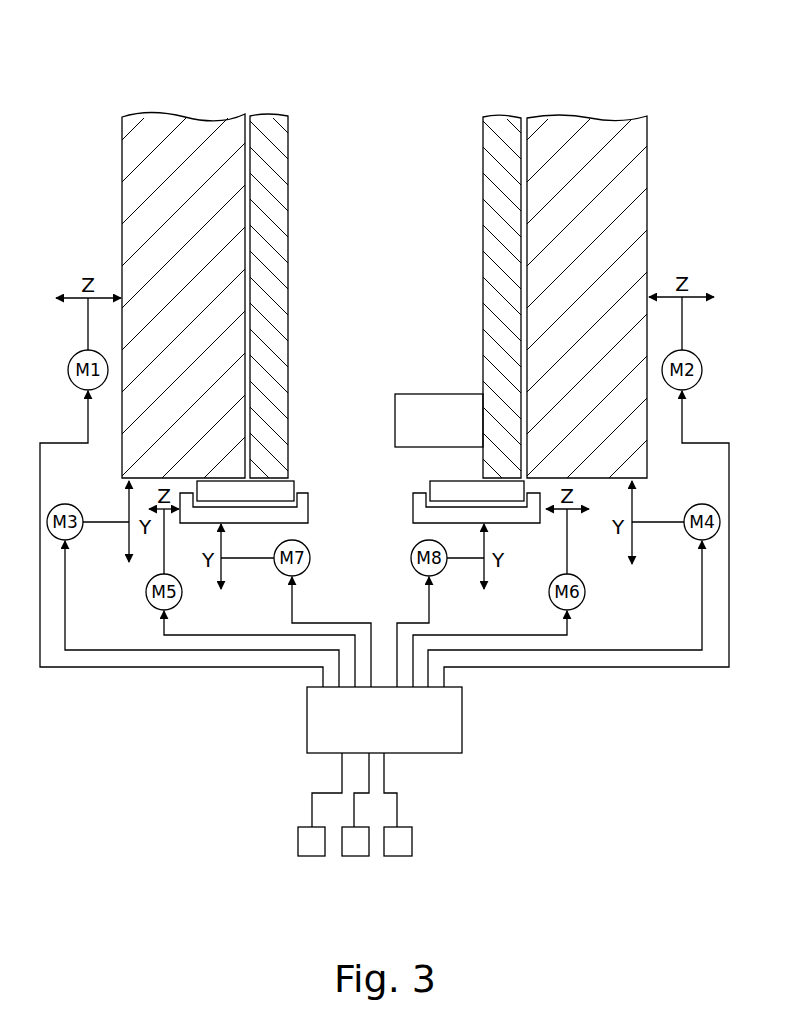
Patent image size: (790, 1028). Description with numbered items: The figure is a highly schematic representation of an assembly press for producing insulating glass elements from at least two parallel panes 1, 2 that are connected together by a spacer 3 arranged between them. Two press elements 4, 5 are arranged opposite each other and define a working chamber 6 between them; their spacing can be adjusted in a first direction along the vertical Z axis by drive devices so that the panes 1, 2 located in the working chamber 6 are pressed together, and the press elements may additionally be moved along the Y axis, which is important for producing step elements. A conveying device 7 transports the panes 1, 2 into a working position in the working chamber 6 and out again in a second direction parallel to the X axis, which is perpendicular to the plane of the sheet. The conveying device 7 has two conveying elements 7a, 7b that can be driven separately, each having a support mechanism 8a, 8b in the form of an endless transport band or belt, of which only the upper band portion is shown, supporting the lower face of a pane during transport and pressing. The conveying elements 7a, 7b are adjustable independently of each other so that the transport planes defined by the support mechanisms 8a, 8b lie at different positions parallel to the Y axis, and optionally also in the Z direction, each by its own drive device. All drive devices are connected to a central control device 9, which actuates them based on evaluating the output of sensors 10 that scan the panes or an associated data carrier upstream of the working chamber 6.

The pane 1 is at (268, 232).
The pane 2 is at (497, 232).
The spacer 3 is at (442, 412).
The press element 4 is at (580, 135).
The press element 5 is at (188, 135).
The working chamber 6 is at (386, 96).
The conveying device 7 is at (338, 418).
The conveying element 7a is at (445, 517).
The conveying element 7b is at (300, 512).
The support mechanism 8a is at (452, 490).
The support mechanism 8b is at (281, 490).
The central control device 9 is at (320, 720).
The sensor 10 is at (400, 846).